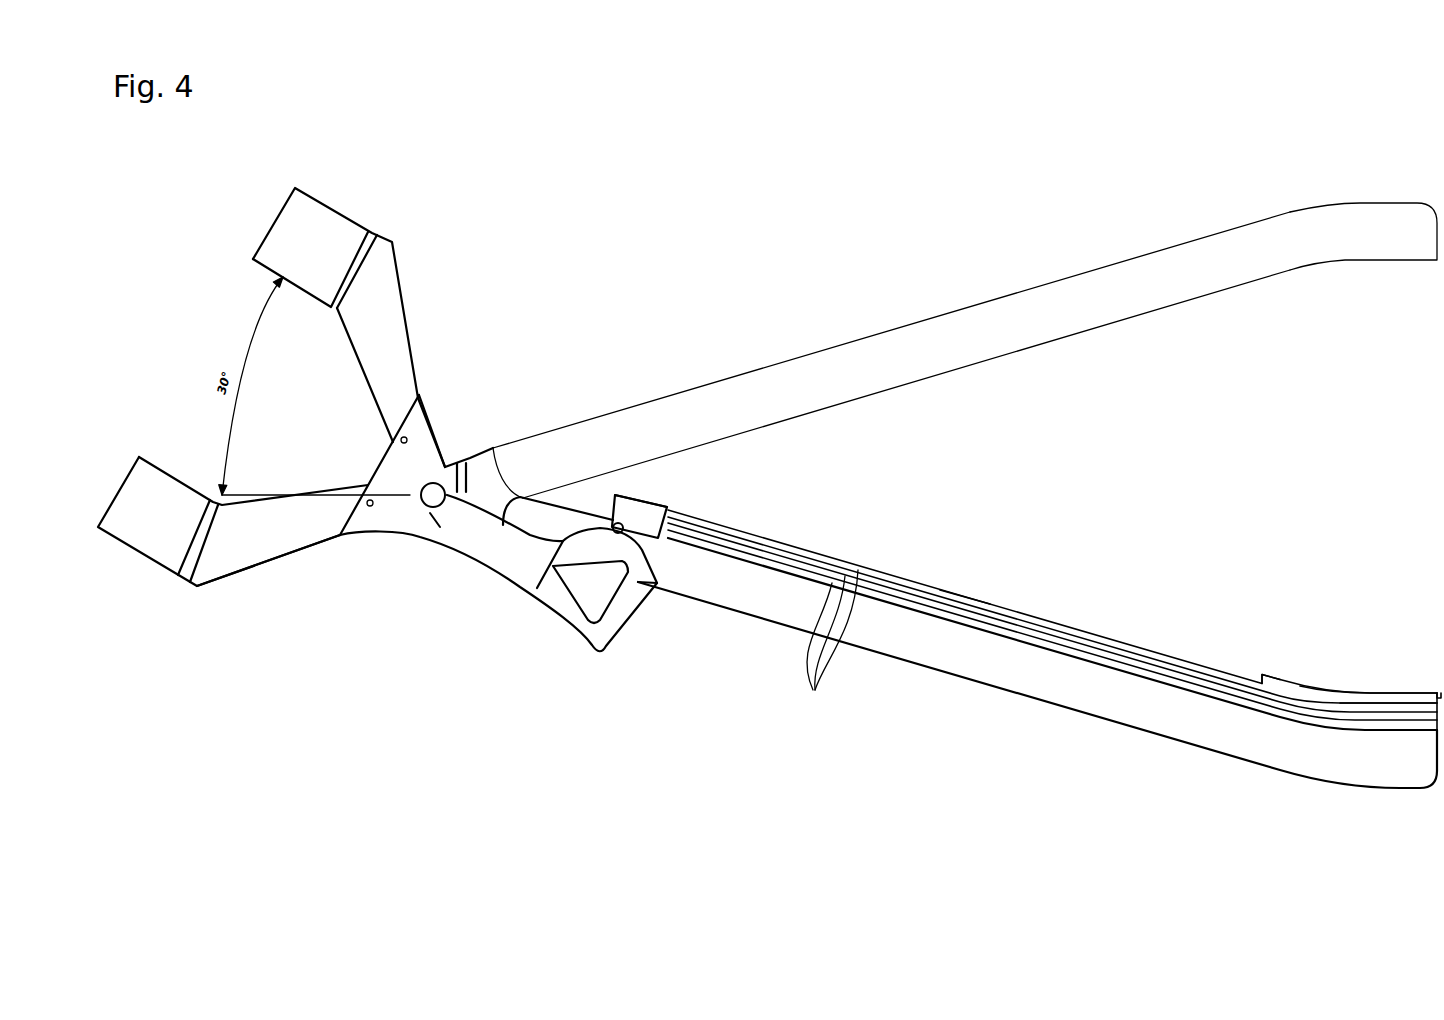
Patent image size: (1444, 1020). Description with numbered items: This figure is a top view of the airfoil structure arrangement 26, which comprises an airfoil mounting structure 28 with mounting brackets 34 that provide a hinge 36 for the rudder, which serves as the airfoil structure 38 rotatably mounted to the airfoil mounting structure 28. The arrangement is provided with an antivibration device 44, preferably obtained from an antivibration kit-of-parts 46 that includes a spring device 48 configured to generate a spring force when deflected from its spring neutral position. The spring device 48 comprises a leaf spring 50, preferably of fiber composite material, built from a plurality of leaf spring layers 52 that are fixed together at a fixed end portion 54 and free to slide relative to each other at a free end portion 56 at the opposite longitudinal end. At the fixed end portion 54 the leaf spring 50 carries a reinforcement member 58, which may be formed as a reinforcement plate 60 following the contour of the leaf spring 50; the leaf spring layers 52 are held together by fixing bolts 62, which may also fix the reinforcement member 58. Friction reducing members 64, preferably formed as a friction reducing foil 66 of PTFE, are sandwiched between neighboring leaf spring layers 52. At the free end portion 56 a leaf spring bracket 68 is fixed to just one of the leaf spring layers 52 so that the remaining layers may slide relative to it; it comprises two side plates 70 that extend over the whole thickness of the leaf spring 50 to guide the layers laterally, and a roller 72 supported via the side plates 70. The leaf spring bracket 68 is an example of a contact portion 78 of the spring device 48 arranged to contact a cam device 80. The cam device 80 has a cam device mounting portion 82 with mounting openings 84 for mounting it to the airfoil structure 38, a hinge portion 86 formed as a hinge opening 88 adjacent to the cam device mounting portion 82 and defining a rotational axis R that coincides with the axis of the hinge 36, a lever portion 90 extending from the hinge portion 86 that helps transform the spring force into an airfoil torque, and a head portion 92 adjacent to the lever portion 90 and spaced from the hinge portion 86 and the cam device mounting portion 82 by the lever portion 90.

The airfoil structure arrangement 26 is at (745, 275).
The airfoil mounting structure 28 is at (967, 335).
The mounting bracket 34 is at (1072, 308).
The hinge 36 is at (481, 407).
The airfoil structure 38 is at (383, 284).
The antivibration device 44 is at (533, 738).
The antivibration kit-of-parts 46 is at (655, 752).
The spring device 48 is at (1130, 620).
The leaf spring 50 is at (1202, 645).
The leaf spring layers 52 is at (965, 612).
The fixed end portion 54 is at (1340, 626).
The free end portion 56 is at (668, 498).
The reinforcement member 58 is at (1285, 680).
The reinforcement plate 60 is at (1401, 695).
The fixing bolts 62 is at (1346, 688).
The friction reducing members 64 is at (817, 649).
The friction reducing foil 66 is at (836, 630).
The leaf spring bracket 68 is at (652, 490).
The side plates 70 is at (656, 542).
The roller 72 is at (613, 520).
The contact portion 78 is at (652, 552).
The cam device 80 is at (405, 615).
The cam device mounting portion 82 is at (357, 548).
The mounting openings 84 is at (403, 443).
The hinge portion 86 is at (423, 450).
The hinge opening 88 is at (432, 520).
The lever portion 90 is at (515, 558).
The head portion 92 is at (548, 645).
The rotational axis R is at (428, 507).